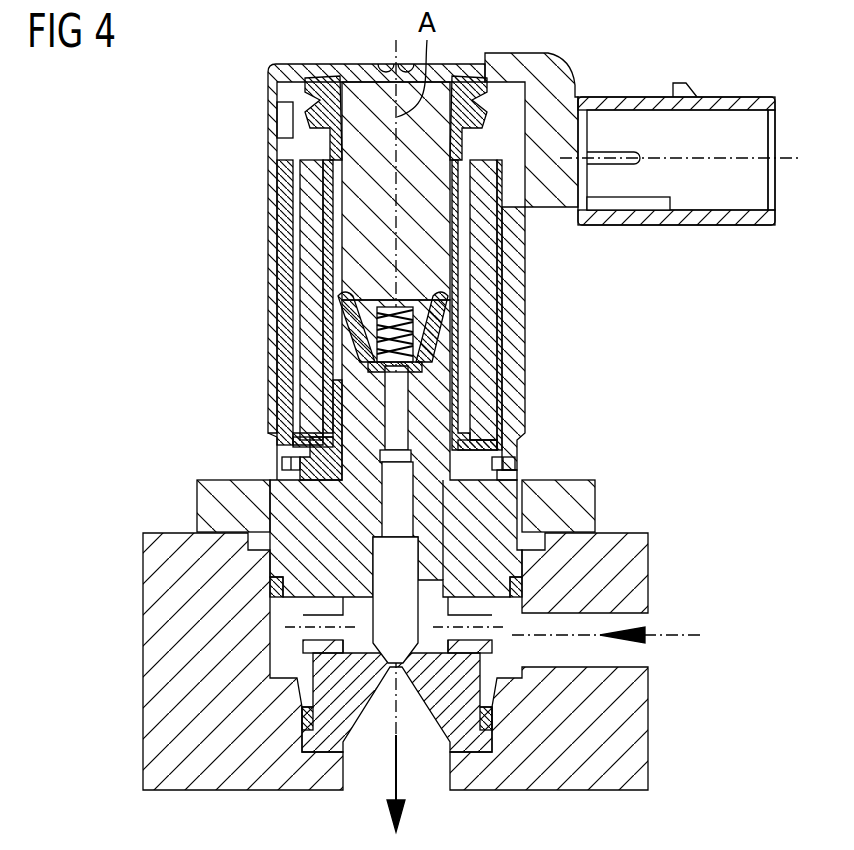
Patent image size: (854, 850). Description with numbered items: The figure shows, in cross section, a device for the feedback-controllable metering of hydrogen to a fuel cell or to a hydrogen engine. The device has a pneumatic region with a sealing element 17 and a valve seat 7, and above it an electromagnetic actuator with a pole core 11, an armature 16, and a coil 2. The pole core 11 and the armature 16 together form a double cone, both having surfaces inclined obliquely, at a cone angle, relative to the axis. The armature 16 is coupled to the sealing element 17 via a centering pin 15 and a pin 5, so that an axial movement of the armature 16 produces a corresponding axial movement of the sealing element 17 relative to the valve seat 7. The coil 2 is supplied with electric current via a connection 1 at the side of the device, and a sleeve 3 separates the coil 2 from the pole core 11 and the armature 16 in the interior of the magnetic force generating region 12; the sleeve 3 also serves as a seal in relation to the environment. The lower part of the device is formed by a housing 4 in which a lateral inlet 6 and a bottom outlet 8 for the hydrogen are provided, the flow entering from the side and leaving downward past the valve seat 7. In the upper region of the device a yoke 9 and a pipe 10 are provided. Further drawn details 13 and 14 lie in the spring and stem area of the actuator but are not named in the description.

The connection 1 is at (632, 162).
The coil 2 is at (483, 282).
The sleeve 3 is at (457, 303).
The housing 4 is at (490, 508).
The pin 5 is at (410, 563).
The lateral inlet 6 is at (700, 635).
The valve seat 7 is at (466, 699).
The bottom outlet 8 is at (402, 768).
The yoke 9 is at (310, 126).
The pipe 10 is at (283, 193).
The pole core 11 is at (372, 222).
The magnetic force generating region 12 is at (353, 333).
The spring 13 is at (382, 348).
The valve stem 14 is at (393, 398).
The centering pin 15 is at (370, 443).
The armature 16 is at (328, 452).
The sealing element 17 is at (303, 676).